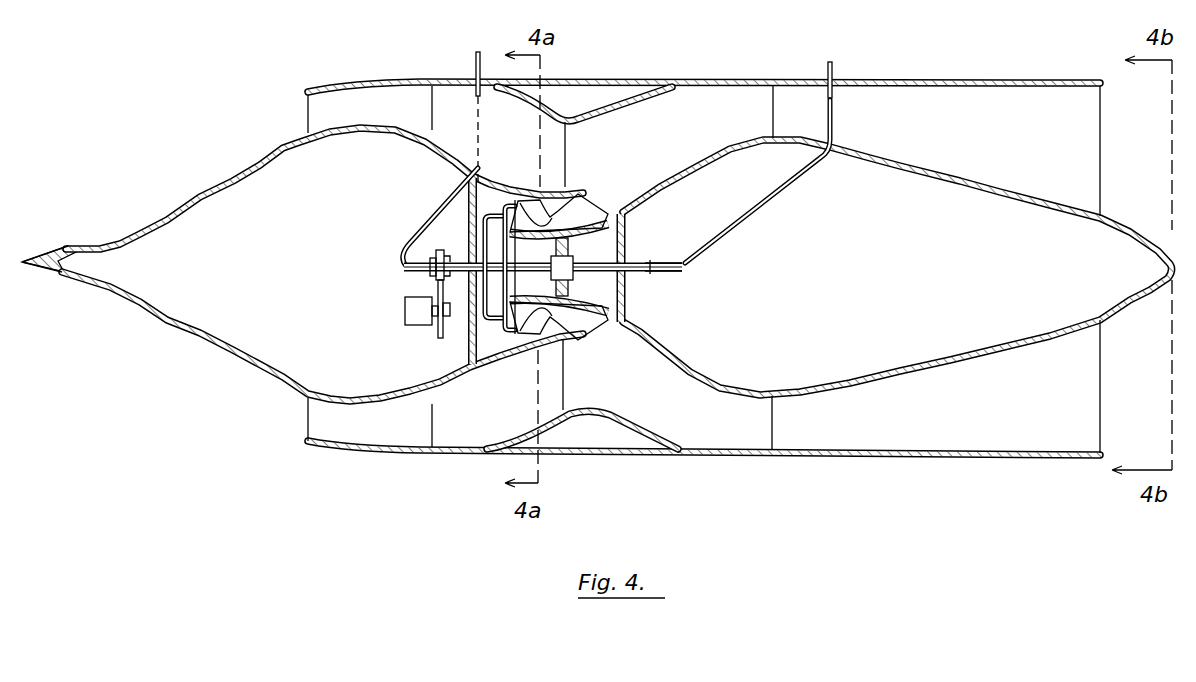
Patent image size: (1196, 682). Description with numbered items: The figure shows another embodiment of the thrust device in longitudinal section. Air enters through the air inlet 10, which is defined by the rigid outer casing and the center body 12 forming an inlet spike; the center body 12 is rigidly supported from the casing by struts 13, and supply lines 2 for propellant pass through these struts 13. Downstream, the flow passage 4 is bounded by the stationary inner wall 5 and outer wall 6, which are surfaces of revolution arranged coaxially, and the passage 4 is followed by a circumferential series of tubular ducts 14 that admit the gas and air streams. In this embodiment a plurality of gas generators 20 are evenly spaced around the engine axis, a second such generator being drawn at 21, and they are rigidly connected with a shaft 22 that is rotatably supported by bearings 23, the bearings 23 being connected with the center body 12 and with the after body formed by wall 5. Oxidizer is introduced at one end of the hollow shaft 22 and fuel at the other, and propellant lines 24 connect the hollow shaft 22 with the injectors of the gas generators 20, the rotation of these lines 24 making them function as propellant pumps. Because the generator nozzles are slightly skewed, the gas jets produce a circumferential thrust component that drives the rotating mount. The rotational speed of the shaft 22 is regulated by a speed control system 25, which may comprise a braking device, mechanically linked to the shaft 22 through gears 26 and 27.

The supply lines 2 is at (440, 203).
The flow passage 4 is at (655, 128).
The inner wall 5 is at (748, 140).
The outer wall 6 is at (690, 86).
The air inlet 10 is at (310, 433).
The center body 12 is at (247, 363).
The struts 13 is at (448, 100).
The tubular ducts 14 is at (902, 104).
The gas generators 20 is at (532, 322).
The upper rotor blade 21 is at (588, 230).
The shaft 22 is at (464, 234).
The bearings 23 is at (628, 277).
The propellant lines 24 is at (490, 210).
The speed control system 25 is at (403, 306).
The gear 26 is at (437, 338).
The gear 27 is at (432, 256).